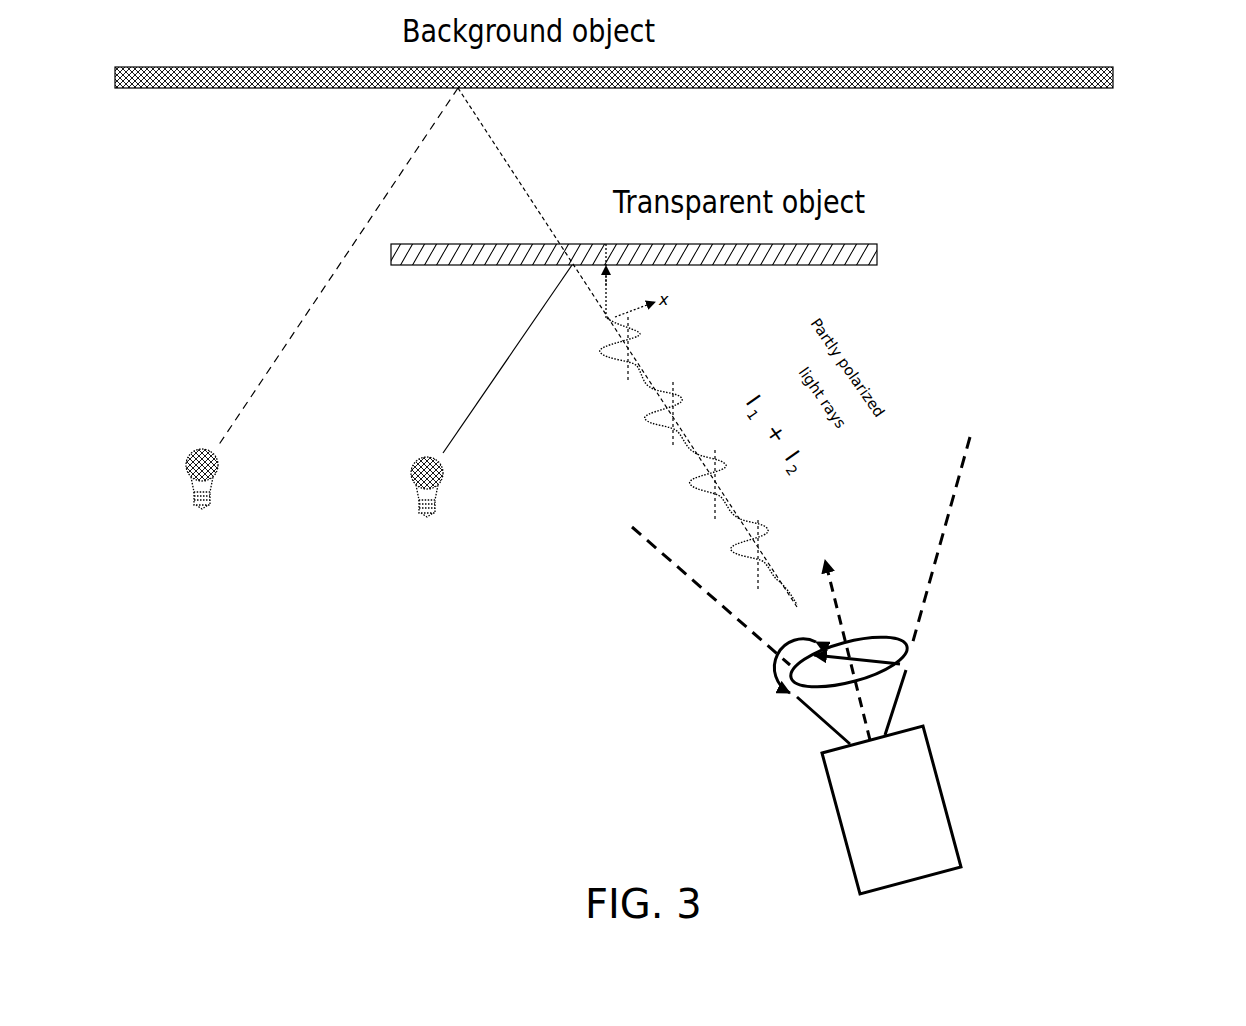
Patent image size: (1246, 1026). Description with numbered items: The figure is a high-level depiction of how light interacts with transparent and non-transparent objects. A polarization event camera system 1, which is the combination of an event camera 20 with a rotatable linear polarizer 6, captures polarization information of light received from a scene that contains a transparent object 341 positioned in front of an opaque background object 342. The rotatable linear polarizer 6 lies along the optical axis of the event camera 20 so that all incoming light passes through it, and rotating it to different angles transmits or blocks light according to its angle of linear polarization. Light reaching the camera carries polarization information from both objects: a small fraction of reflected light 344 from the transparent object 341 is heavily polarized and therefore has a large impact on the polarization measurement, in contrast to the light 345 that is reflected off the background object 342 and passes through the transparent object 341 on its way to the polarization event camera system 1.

The background object 342 is at (1133, 55).
The transparent object 341 is at (898, 236).
The light reflected off the background object 345 is at (258, 332).
The reflected light from the transparent object 344 is at (509, 431).
The rotatable linear polarizer 6 is at (912, 648).
The event camera 20 is at (942, 716).
The polarization event camera system 1 is at (803, 746).